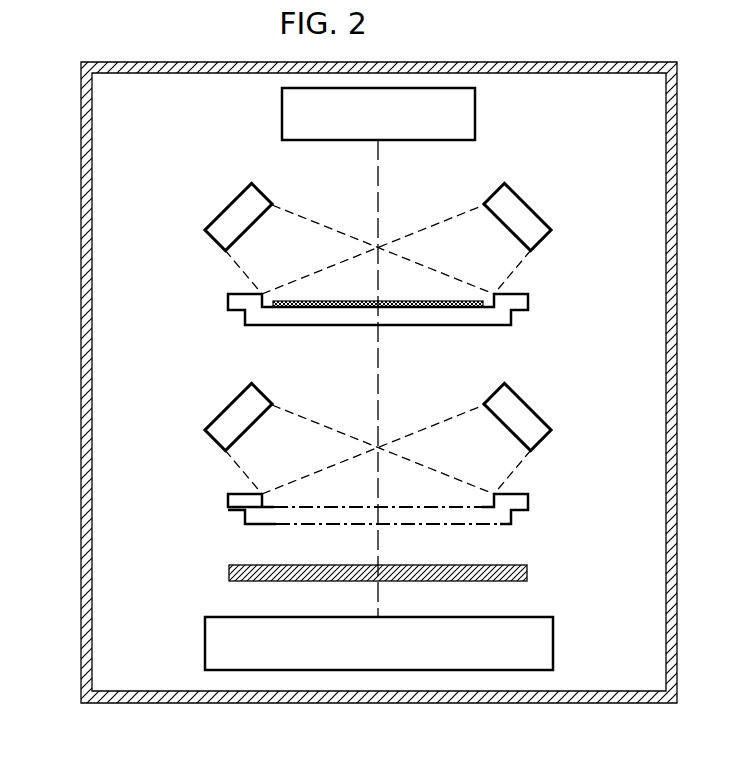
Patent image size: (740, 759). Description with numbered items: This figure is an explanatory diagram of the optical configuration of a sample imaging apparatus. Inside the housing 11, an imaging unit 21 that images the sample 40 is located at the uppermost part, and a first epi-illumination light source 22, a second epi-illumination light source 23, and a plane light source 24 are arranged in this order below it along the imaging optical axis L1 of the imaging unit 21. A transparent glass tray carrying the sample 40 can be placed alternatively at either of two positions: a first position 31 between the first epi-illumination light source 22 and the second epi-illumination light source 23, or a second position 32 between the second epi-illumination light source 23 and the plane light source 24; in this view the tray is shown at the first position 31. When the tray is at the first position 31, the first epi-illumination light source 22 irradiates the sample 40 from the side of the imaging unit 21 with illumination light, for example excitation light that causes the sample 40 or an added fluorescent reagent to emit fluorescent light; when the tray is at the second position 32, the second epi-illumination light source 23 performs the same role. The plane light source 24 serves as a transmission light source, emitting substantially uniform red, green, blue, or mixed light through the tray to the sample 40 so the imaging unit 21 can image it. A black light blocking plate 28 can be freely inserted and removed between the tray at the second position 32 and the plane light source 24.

The housing 11 is at (81, 106).
The imaging unit 21 is at (476, 112).
The imaging optical axis L1 is at (379, 171).
The first epi-illumination light source 22 is at (222, 222).
The second epi-illumination light source 23 is at (219, 423).
The first position 31 is at (353, 309).
The second position 32 is at (353, 508).
The sample 40 is at (443, 309).
The light blocking plate 28 is at (528, 572).
The plane light source 24 is at (554, 636).